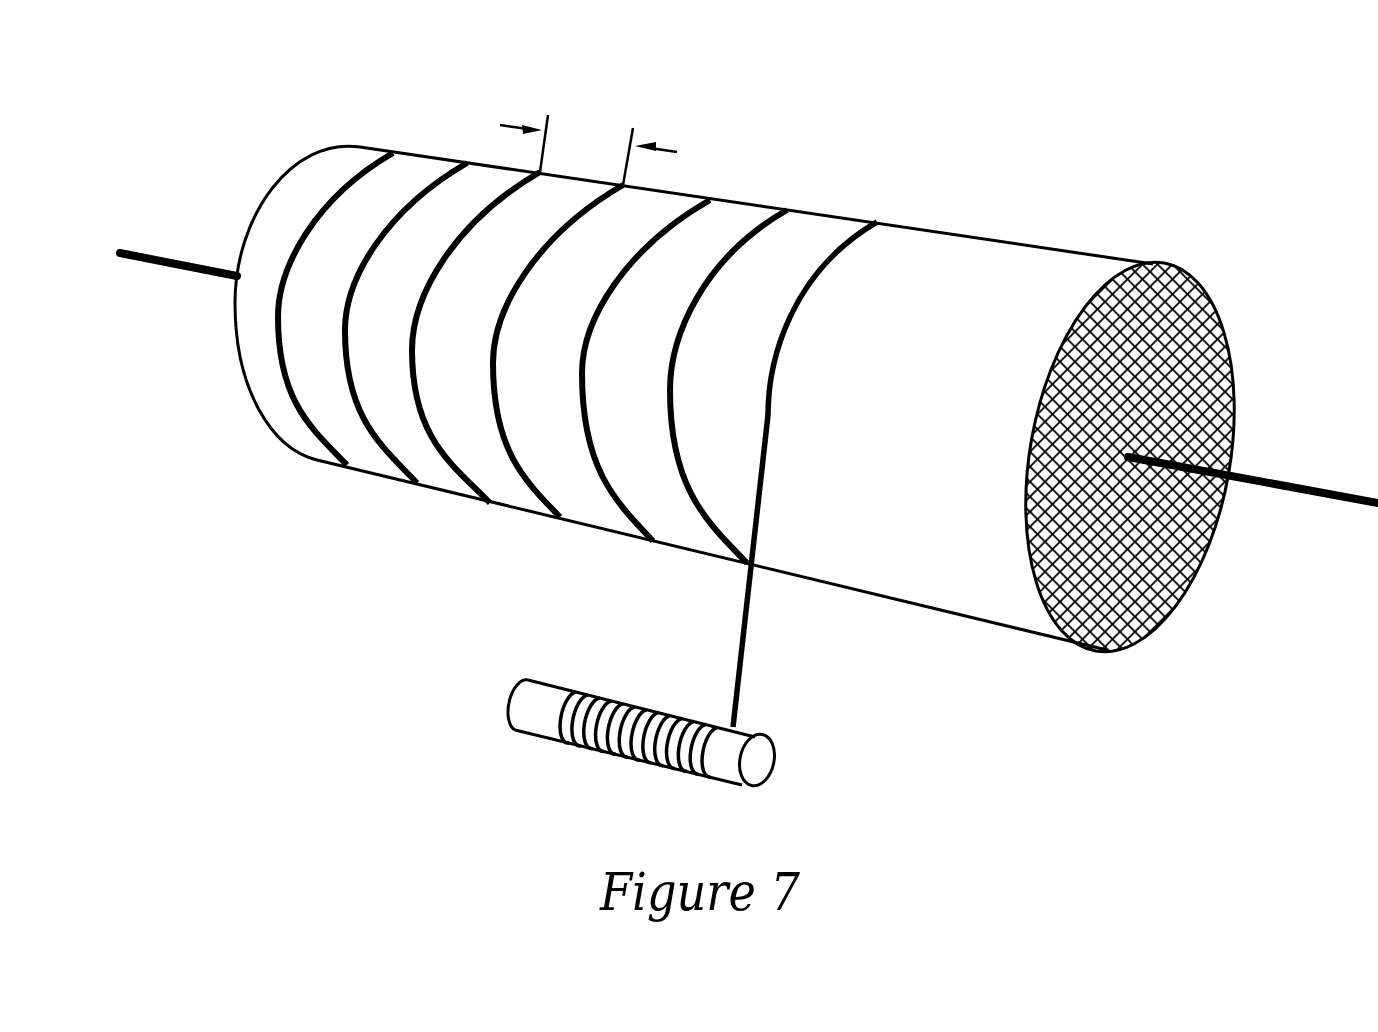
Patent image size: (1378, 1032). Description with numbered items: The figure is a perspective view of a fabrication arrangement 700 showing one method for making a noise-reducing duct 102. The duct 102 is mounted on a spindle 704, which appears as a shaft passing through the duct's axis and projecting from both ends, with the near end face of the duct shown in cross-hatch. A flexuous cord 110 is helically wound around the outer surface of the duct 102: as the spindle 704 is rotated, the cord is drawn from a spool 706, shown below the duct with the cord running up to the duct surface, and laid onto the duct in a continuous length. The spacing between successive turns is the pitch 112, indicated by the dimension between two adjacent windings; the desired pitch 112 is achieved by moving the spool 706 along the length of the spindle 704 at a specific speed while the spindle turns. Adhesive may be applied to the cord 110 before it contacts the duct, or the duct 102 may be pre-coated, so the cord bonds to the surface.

The inductor assembly 700 is at (1033, 127).
The duct 102 is at (1000, 277).
The flexuous cord 110 is at (830, 251).
The pitch 112 is at (613, 150).
The spindle 704 is at (1203, 397).
The spool 706 is at (762, 760).